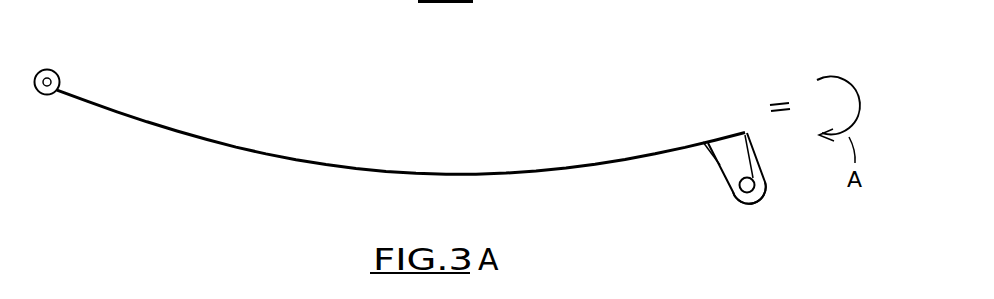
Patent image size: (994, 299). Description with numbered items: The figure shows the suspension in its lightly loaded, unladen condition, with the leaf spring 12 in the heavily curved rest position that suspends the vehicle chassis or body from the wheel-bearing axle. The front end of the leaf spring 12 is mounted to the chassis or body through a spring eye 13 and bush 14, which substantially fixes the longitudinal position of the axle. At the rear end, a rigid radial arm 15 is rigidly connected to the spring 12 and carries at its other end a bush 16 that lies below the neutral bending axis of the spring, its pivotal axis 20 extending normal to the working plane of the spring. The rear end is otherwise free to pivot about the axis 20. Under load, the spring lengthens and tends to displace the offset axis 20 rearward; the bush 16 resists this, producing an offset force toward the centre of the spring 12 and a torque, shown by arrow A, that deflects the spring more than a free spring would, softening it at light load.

The leaf spring 12 is at (322, 162).
The spring eye 13 is at (57, 93).
The bush 14 is at (52, 70).
The rigid radial arm 15 is at (733, 157).
The bush 16 is at (733, 199).
The pivotal axis 20 is at (750, 184).